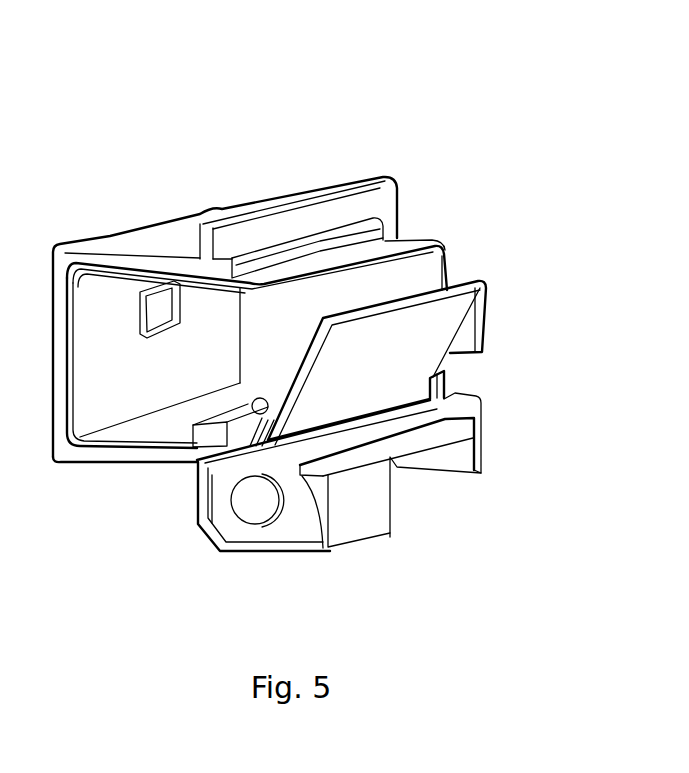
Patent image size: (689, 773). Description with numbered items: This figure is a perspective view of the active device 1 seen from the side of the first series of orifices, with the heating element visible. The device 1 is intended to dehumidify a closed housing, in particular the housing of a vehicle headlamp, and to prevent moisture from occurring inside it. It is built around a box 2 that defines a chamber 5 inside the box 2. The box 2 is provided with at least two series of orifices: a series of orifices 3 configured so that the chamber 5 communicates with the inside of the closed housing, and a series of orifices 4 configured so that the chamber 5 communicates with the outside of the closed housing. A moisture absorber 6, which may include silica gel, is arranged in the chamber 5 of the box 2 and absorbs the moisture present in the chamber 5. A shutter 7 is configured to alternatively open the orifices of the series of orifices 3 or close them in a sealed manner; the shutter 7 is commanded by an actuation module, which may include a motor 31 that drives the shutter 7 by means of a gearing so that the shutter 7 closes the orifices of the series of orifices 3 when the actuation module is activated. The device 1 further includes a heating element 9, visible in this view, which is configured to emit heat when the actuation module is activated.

The active device 1 is at (340, 138).
The box 2 is at (137, 250).
The series of orifices 3 is at (314, 286).
The series of orifices 4 is at (150, 323).
The chamber 5 is at (156, 410).
The moisture absorber 6 is at (205, 430).
The shutter 7 is at (413, 323).
The heating element 9 is at (272, 515).
The motor 31 is at (313, 530).